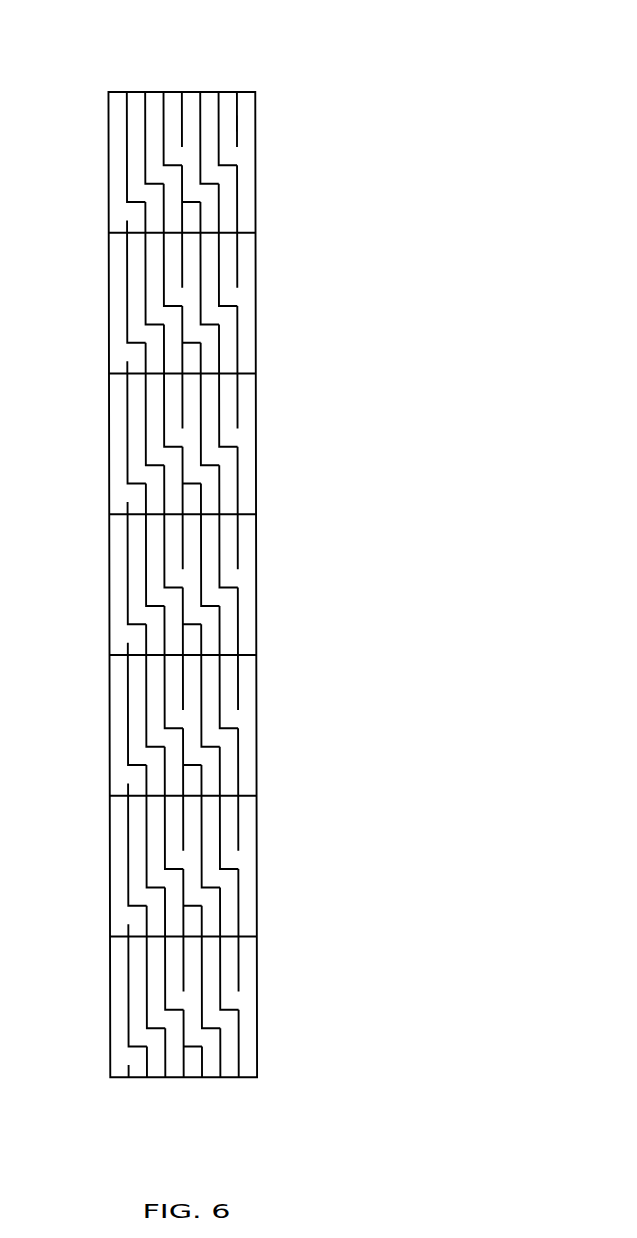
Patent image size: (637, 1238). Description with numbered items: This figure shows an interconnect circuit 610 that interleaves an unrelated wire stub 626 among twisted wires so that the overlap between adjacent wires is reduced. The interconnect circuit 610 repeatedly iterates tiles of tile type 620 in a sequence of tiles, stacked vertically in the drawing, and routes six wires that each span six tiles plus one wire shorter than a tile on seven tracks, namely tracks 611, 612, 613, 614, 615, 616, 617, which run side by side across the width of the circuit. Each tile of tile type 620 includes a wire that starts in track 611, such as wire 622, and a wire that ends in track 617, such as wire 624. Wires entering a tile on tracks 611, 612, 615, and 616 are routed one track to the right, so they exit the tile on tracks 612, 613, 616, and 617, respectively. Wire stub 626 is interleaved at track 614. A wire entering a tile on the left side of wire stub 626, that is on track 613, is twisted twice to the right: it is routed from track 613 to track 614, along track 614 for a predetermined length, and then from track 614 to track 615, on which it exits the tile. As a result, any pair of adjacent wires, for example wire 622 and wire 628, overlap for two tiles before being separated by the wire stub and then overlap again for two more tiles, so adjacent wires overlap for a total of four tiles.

The interconnect circuit 610 is at (97, 57).
The track 611 is at (133, 91).
The track 612 is at (152, 1079).
The track 613 is at (159, 64).
The track 614 is at (178, 1103).
The track 615 is at (194, 91).
The track 616 is at (214, 1079).
The track 617 is at (231, 64).
The tile type 620 is at (108, 178).
The wire 622 is at (126, 221).
The wire 624 is at (238, 135).
The wire stub 626 is at (183, 92).
The wire 628 is at (126, 131).